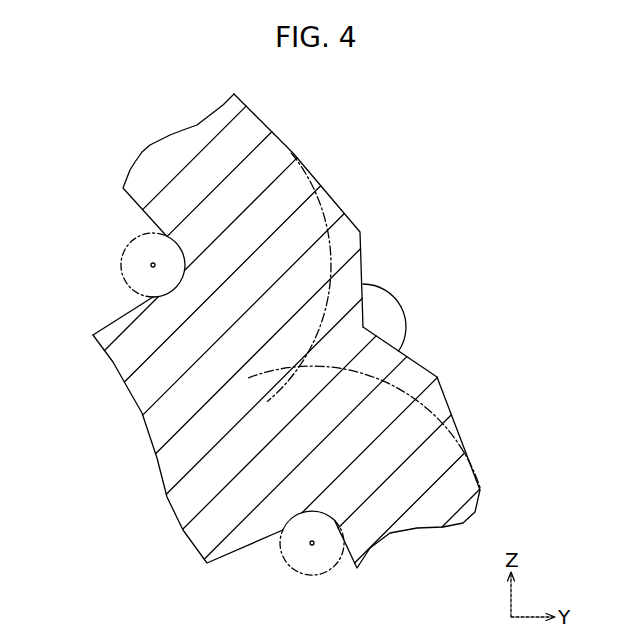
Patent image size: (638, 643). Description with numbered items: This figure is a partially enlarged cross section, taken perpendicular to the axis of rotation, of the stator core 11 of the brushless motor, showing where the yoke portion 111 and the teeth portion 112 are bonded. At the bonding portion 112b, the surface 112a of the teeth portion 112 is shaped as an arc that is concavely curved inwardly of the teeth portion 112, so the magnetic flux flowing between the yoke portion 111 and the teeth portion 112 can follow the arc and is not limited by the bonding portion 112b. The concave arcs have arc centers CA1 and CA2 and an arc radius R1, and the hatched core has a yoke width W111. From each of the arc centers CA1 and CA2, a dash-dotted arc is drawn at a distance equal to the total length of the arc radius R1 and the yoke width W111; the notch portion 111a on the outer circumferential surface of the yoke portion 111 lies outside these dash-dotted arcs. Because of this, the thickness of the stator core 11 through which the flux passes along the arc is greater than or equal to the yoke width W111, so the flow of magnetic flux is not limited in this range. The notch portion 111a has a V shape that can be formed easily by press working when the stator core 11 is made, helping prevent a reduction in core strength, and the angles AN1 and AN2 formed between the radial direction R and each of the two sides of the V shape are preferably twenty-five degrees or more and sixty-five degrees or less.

The stator core 11 is at (152, 148).
The yoke portion 111 is at (400, 497).
The teeth portion 112 is at (167, 430).
The notch portion 111a is at (420, 364).
The surface of teeth portion 112a is at (113, 321).
The bonding portion 112b is at (138, 276).
The arc center CA1 is at (135, 253).
The arc center CA2 is at (310, 543).
The arc radius R1 is at (153, 265).
The yoke width W111 is at (263, 123).
The angle AN1 is at (390, 285).
The angle AN2 is at (426, 329).
The radial direction R is at (363, 327).